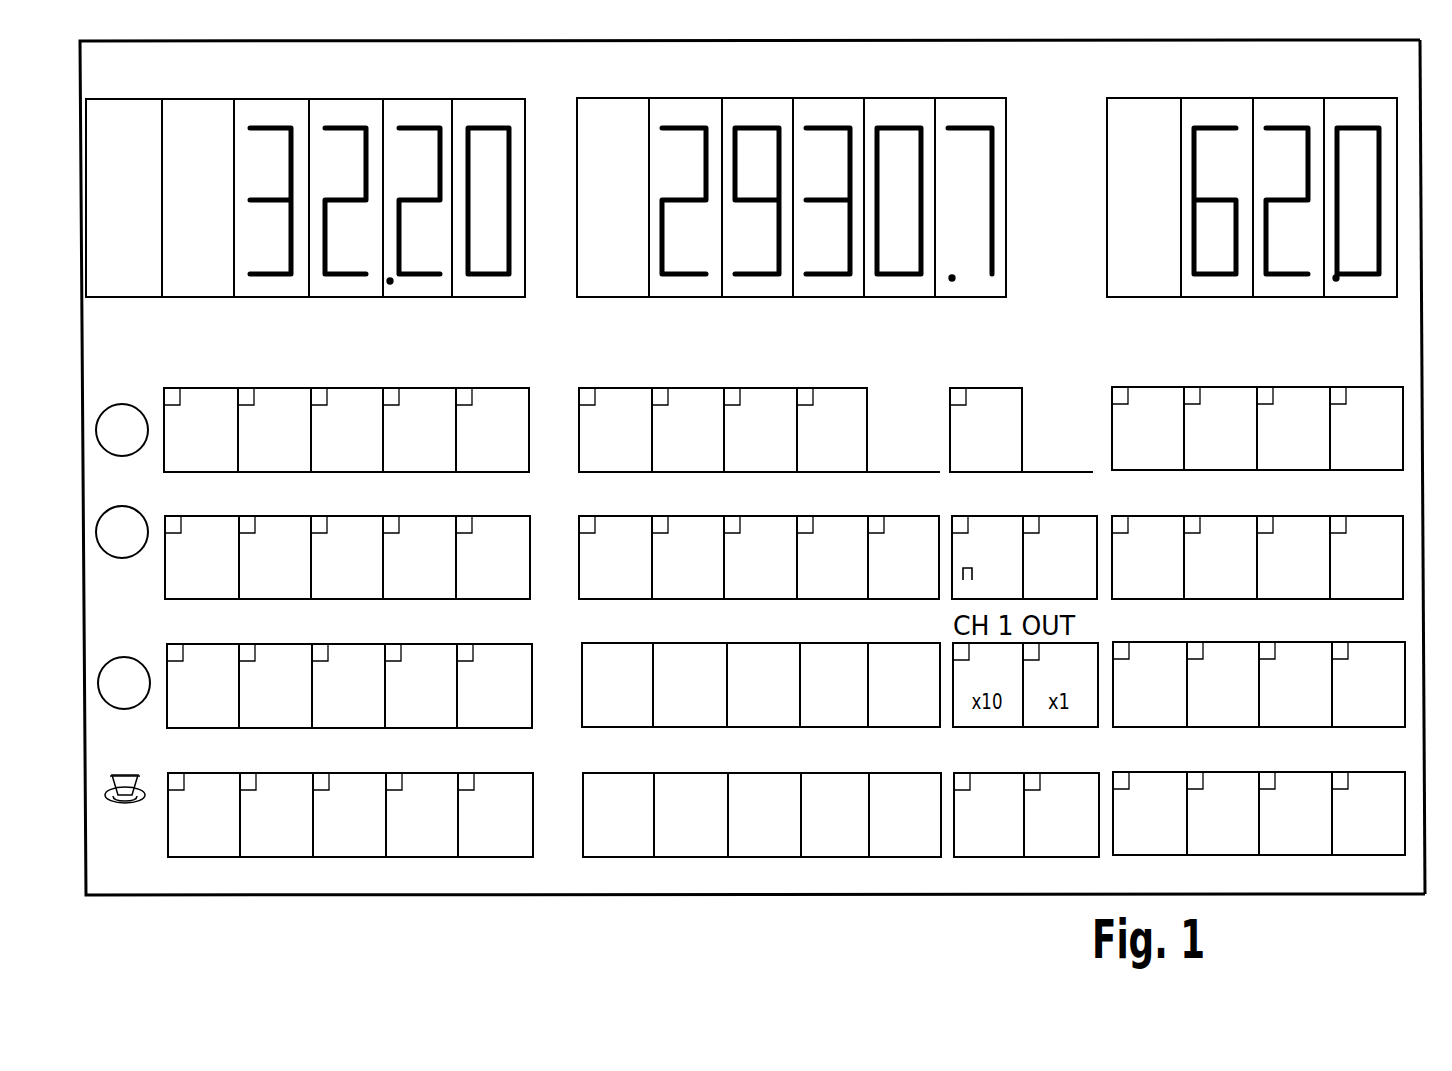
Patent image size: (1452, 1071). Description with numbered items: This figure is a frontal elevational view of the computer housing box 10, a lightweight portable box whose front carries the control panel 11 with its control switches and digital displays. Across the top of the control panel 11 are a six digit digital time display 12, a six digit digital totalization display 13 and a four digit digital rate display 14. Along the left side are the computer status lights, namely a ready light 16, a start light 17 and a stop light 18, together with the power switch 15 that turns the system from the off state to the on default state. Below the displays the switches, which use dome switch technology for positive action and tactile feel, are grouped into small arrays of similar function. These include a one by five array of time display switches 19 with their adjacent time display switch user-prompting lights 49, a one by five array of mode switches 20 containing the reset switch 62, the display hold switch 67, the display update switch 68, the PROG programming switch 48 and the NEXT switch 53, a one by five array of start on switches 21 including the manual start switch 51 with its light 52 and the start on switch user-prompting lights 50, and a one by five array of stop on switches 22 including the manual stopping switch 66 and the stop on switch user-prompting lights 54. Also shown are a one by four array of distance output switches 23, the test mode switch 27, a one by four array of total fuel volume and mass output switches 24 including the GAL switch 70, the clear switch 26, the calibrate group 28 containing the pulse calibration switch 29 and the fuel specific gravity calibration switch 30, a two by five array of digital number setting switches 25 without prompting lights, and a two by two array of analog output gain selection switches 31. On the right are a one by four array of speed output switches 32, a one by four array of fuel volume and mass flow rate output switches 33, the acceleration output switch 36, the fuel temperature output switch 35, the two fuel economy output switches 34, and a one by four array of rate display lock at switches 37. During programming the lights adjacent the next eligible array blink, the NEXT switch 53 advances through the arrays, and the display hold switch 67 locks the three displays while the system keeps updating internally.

The computer housing box 10 is at (1421, 147).
The control panel 11 is at (1421, 490).
The digital time display 12 is at (483, 102).
The digital totalization display 13 is at (922, 98).
The digital rate display 14 is at (1294, 98).
The power switch 15 is at (106, 785).
The ready light 16 is at (96, 432).
The start light 17 is at (96, 532).
The stop light 18 is at (98, 680).
The time display switches 19 is at (327, 404).
The time display switch user-prompting lights 49 is at (317, 392).
The mode switches 20 is at (347, 536).
The reset switch 62 is at (202, 537).
The display hold switch 67 is at (279, 530).
The display update switch 68 is at (358, 530).
The PROG programming switch 48 is at (449, 522).
The NEXT switch 53 is at (512, 522).
The start on switches 21 is at (347, 675).
The manual start switch 51 is at (171, 718).
The manual start switch light 52 is at (186, 657).
The start on switch user-prompting lights 50 is at (457, 659).
The manual stopping switch 66 is at (332, 813).
The stop on switches 22 is at (187, 838).
The stop on switch user-prompting lights 54 is at (465, 780).
The distance output switches 23 is at (579, 412).
The test mode switch 27 is at (950, 418).
The total fuel volume and mass output switches 24 is at (750, 554).
The GAL switch 70 is at (602, 582).
The clear switch 26 is at (913, 515).
The calibrate keyboard 28 is at (1015, 554).
The pulse calibration switch 29 is at (958, 598).
The fuel specific gravity calibration switch 30 is at (1089, 597).
The digital number setting switches 25 is at (603, 727).
The analog output gain selection switches 31 is at (998, 857).
The speed output switches 32 is at (1405, 392).
The fuel volume and mass flow rate output switches 33 is at (1403, 523).
The acceleration output switch 36 is at (1265, 682).
The fuel temperature output switch 35 is at (1155, 722).
The fuel economy output switches 34 is at (1237, 728).
The rate display lock at switches 37 is at (1401, 778).